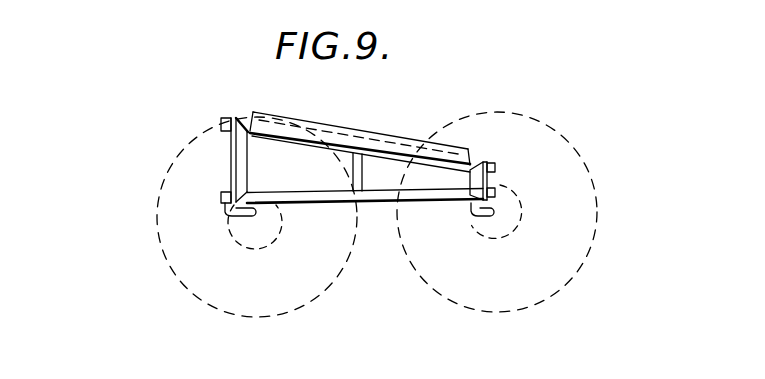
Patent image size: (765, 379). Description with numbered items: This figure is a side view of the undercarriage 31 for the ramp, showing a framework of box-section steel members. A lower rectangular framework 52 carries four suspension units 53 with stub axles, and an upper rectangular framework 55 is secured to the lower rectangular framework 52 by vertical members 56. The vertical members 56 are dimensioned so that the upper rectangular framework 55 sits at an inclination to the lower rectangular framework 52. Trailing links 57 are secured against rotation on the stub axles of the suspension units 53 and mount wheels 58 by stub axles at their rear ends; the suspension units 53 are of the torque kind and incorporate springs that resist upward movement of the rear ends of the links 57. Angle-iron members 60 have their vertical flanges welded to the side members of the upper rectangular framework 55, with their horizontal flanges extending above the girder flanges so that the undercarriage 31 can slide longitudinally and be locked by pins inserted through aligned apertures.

The undercarriage 31 is at (340, 176).
The lower rectangular framework 52 is at (375, 205).
The suspension unit 53 is at (228, 210).
The upper rectangular framework 55 is at (247, 117).
The vertical member 56 is at (236, 164).
The trailing link 57 is at (247, 217).
The wheel 58 is at (158, 250).
The angle-iron member 60 is at (335, 135).